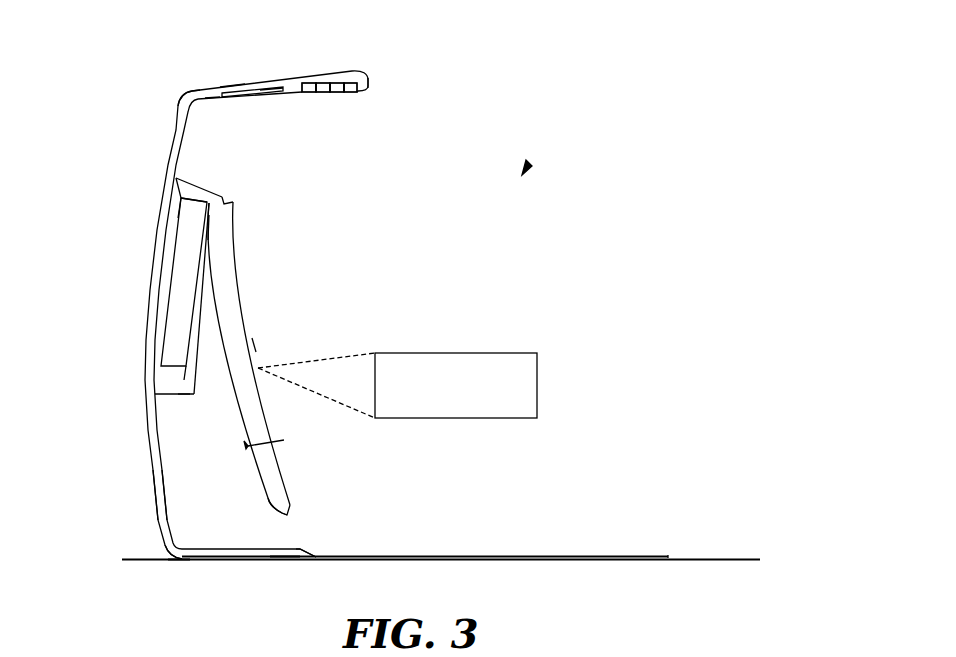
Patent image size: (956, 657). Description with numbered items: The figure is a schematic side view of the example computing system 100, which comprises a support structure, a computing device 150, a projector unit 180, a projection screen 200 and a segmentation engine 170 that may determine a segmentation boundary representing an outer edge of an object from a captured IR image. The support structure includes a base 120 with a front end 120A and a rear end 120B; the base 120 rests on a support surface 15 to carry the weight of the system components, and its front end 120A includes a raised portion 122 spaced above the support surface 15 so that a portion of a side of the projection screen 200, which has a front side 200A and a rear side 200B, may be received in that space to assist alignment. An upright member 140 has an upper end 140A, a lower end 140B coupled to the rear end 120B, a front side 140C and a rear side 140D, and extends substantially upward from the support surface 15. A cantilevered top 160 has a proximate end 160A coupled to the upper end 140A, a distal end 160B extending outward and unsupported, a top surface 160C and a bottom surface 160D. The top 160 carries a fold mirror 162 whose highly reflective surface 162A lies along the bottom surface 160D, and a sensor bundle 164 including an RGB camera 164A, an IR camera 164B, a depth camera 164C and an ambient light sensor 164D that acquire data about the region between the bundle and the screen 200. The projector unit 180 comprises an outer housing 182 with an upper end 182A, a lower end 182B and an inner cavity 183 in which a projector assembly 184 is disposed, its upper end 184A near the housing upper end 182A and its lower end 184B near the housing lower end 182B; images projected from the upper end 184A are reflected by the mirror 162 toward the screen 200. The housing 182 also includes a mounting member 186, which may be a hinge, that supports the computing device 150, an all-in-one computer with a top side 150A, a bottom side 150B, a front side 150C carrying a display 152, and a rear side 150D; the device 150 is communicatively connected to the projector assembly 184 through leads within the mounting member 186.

The computing system 100 is at (531, 166).
The support surface 15 is at (706, 558).
The projection screen 200 is at (640, 555).
The front side 200A is at (670, 561).
The rear side 200B is at (281, 563).
The base 120 is at (258, 549).
The front end 120A is at (318, 556).
The rear end 120B is at (176, 563).
The raised portion 122 is at (306, 548).
The upright member 140 is at (145, 372).
The upper end 140A is at (177, 99).
The lower end 140B is at (164, 548).
The front side 140C is at (168, 470).
The rear side 140D is at (152, 466).
The computing device 150 is at (256, 283).
The top side 150A is at (227, 203).
The bottom side 150B is at (289, 520).
The front side 150C is at (253, 338).
The display 152 is at (316, 367).
The rear side 150D is at (286, 441).
The mounting member 186 is at (216, 225).
The top 160 is at (252, 50).
The proximate end 160A is at (186, 94).
The distal end 160B is at (372, 78).
The top surface 160C is at (228, 83).
The bottom surface 160D is at (212, 101).
The fold mirror 162 is at (231, 100).
The reflective surface 162A is at (267, 97).
The sensor bundle 164 is at (357, 94).
The RGB camera 164A is at (350, 83).
The IR camera 164B is at (336, 83).
The depth camera 164C is at (322, 83).
The ambient light sensor 164D is at (309, 83).
The segmentation engine 170 is at (456, 420).
The projector unit 180 is at (147, 316).
The outer housing 182 is at (165, 394).
The upper end 182A is at (180, 173).
The lower end 182B is at (182, 403).
The inner cavity 183 is at (170, 230).
The projector assembly 184 is at (172, 273).
The upper end 184A is at (174, 193).
The lower end 184B is at (188, 376).